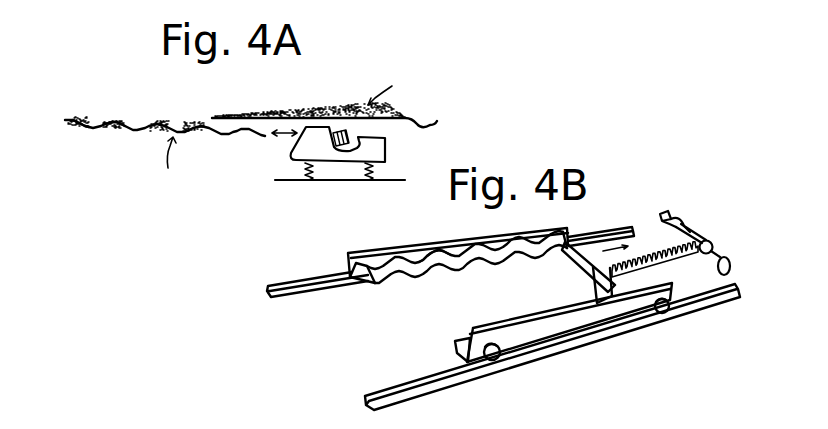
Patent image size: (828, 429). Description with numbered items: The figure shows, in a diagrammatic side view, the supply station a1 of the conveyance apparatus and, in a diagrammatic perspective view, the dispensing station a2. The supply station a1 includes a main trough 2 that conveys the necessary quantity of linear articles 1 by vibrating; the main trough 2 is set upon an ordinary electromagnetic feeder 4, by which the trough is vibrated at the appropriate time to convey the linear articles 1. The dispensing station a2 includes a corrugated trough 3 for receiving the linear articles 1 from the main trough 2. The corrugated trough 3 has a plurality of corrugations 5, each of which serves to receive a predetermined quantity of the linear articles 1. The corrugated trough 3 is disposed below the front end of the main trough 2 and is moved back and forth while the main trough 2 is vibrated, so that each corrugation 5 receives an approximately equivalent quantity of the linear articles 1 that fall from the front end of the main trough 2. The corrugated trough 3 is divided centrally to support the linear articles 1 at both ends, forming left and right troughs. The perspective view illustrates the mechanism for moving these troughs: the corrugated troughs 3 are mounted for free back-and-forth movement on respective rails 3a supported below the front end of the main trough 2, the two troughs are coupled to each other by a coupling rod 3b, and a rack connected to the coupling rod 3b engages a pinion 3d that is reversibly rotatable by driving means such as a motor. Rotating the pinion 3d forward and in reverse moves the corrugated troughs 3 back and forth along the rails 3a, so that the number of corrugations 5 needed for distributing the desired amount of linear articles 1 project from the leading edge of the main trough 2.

In FIG. 4A, the linear articles 1 is at (160, 118).
In FIG. 4A, the main trough 2 is at (331, 128).
In FIG. 4A, the corrugated trough 3 is at (178, 122).
In FIG. 4B, the corrugated trough 3 is at (399, 273).
In FIG. 4A, the electromagnetic feeder 4 is at (338, 156).
In FIG. 4A, the corrugations 5 is at (80, 130).
In FIG. 4B, the corrugations 5 is at (450, 283).
In FIG. 4A, the supply station a1 is at (393, 83).
In FIG. 4A, the dispensing station a2 is at (169, 167).
In FIG. 4B, the rails 3a is at (298, 296).
In FIG. 4B, the coupling rod 3b is at (589, 274).
In FIG. 4B, the pinion 3d is at (705, 241).